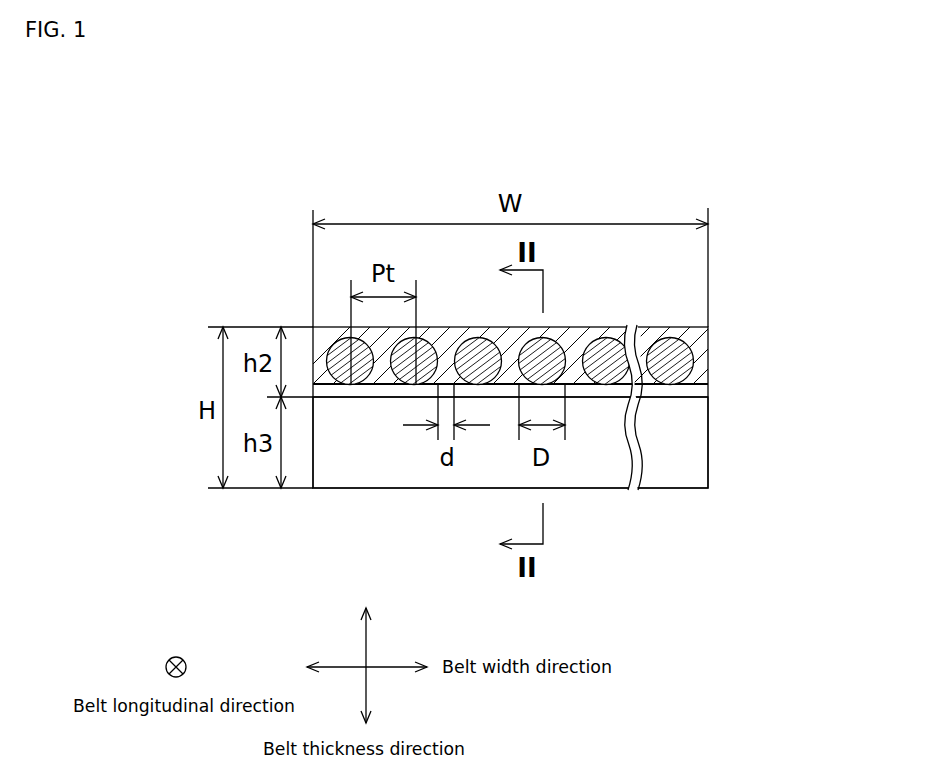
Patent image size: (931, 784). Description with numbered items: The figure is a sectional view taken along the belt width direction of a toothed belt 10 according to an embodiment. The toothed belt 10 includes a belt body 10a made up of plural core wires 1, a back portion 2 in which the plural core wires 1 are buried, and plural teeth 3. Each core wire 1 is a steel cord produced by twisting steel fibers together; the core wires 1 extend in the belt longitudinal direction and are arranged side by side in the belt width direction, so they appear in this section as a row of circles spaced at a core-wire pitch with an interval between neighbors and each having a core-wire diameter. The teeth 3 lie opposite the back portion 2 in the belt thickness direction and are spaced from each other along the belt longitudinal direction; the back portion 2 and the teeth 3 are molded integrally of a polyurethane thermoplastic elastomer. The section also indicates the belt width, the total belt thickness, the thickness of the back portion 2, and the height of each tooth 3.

The toothed belt 10 is at (612, 163).
The belt body 10a is at (776, 320).
The back portion 2 is at (693, 334).
The core wire 1 is at (690, 365).
The tooth 3 is at (695, 441).